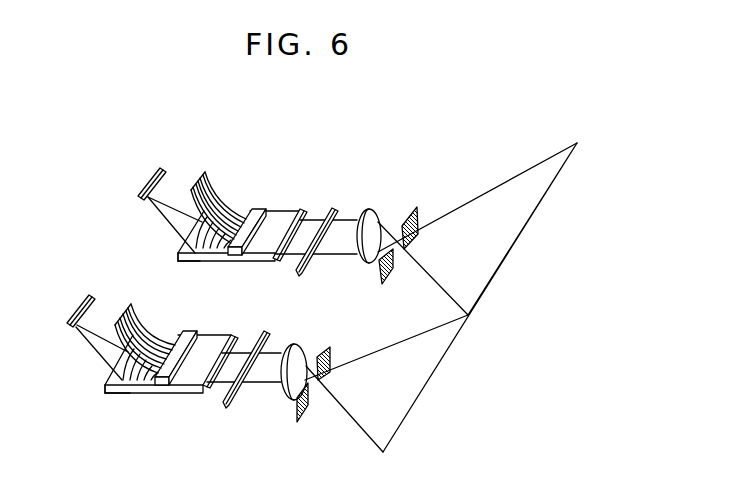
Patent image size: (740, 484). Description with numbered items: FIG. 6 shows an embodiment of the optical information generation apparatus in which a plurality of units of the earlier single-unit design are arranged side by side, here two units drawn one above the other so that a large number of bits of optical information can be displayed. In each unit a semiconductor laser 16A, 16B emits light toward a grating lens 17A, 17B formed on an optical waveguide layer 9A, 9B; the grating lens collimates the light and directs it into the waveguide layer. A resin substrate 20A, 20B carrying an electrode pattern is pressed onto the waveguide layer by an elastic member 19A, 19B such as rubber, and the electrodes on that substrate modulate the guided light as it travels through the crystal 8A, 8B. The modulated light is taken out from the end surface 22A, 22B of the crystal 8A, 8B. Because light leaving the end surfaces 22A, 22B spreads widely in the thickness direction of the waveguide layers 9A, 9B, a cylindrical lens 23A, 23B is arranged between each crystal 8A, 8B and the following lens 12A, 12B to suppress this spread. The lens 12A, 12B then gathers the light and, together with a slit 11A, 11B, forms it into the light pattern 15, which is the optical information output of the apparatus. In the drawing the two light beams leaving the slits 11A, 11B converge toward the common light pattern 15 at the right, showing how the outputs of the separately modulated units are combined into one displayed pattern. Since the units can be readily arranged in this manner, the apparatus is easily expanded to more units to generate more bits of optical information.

The crystal 8A is at (220, 262).
The crystal 8B is at (176, 394).
The optical waveguide layer 9A is at (178, 262).
The optical waveguide layer 9B is at (150, 393).
The slit 11A is at (416, 208).
The slit 11B is at (332, 346).
The lens 12A is at (371, 208).
The lens 12B is at (281, 400).
The light pattern 15 is at (553, 183).
The semiconductor laser 16A is at (152, 173).
The semiconductor laser 16B is at (80, 302).
The grating lens 17A is at (198, 263).
The grating lens 17B is at (127, 394).
The elastic member 19A is at (258, 209).
The elastic member 19B is at (190, 331).
The resin substrate 20A is at (215, 180).
The resin substrate 20B is at (140, 298).
The end surface 22A is at (273, 259).
The end surface 22B is at (209, 393).
The cylindrical lens 23A is at (341, 193).
The cylindrical lens 23B is at (263, 333).